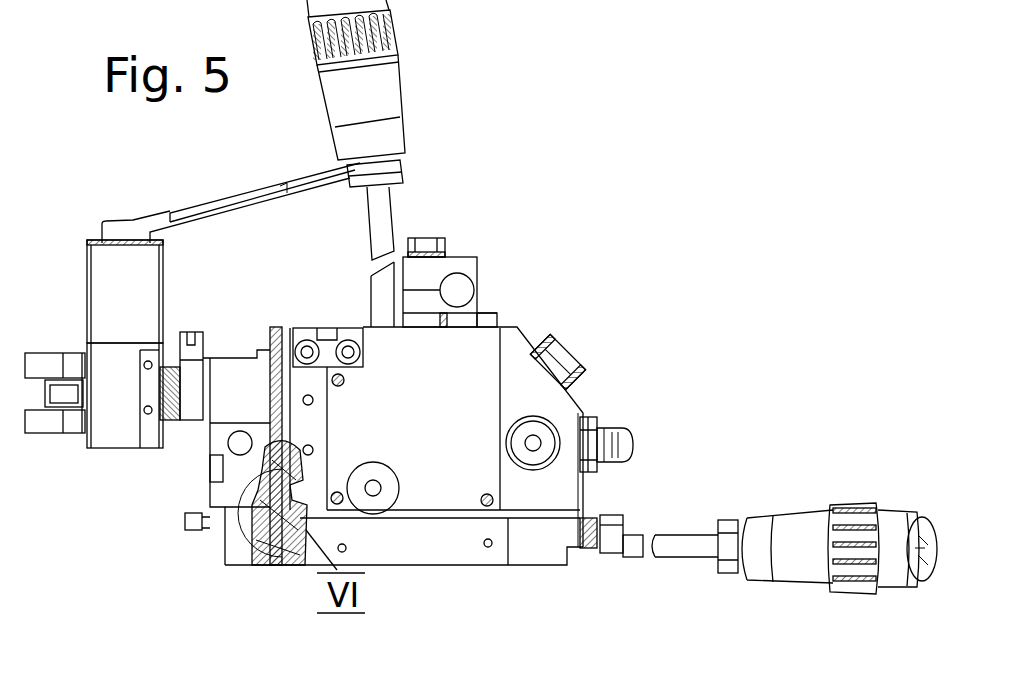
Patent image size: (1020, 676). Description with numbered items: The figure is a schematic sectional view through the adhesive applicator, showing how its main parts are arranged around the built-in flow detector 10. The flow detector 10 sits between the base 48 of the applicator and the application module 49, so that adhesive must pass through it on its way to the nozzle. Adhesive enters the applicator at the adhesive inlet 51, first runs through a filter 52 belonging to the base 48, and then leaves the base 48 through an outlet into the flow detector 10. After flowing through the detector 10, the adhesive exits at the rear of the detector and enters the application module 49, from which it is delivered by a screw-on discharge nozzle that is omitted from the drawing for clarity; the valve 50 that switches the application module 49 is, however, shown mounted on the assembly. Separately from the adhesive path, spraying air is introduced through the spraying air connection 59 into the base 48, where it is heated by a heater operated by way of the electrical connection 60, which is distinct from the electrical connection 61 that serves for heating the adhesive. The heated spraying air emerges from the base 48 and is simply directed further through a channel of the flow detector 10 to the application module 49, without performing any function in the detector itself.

The flow detector 10 is at (277, 573).
The base 48 is at (483, 375).
The application module 49 is at (220, 490).
The valve 50 is at (105, 277).
The adhesive inlet 51 is at (613, 427).
The filter 52 is at (565, 360).
The spraying air connection 59 is at (610, 538).
The electrical connection 60 is at (808, 538).
The electrical connection 61 is at (377, 80).